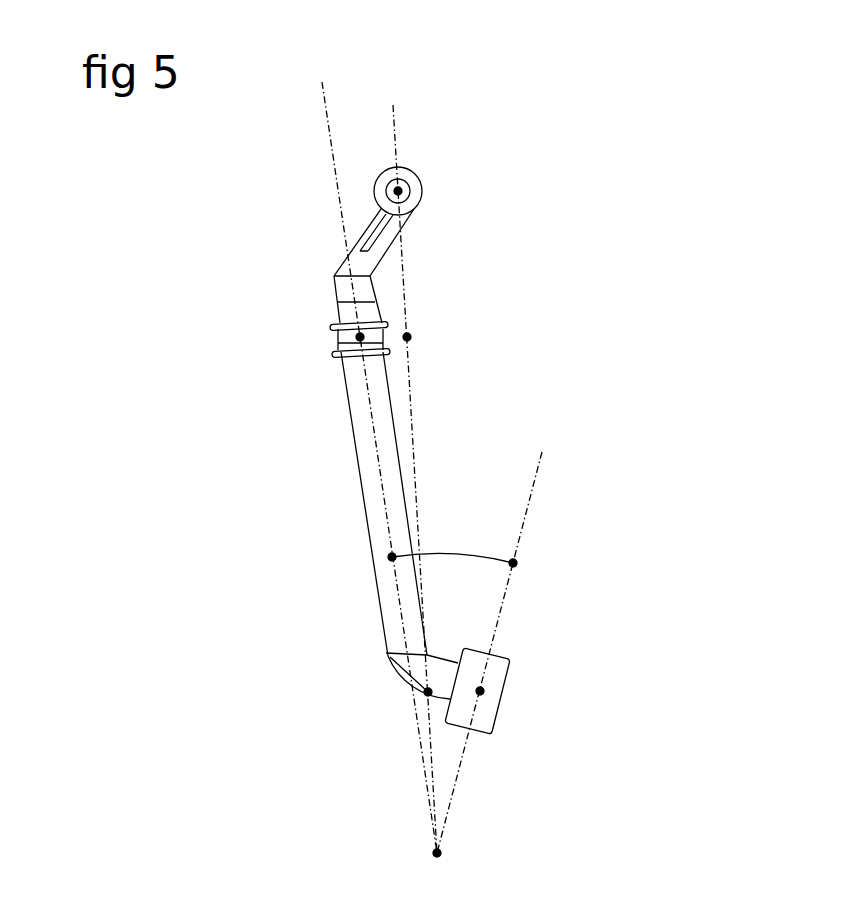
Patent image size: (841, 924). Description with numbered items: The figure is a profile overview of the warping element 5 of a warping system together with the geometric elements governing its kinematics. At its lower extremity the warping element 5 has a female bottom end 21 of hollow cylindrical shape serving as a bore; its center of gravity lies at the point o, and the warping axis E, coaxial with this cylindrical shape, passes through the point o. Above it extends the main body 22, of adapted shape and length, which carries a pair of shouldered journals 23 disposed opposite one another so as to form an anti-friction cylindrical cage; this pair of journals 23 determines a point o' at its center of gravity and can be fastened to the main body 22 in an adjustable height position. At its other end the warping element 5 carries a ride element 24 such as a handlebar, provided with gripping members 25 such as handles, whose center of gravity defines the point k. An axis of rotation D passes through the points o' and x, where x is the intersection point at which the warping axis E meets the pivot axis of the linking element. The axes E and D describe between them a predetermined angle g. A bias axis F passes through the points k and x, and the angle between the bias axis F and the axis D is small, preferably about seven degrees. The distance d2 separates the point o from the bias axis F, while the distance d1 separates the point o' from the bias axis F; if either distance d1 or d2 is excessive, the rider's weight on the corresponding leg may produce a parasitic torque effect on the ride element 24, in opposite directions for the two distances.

The warping element 5 is at (128, 668).
The female bottom end 21 is at (498, 667).
The main body 22 is at (372, 480).
The shouldered journals 23 is at (336, 343).
The ride element 24 is at (352, 250).
The gripping members 25 is at (415, 172).
The point k is at (420, 208).
The distance d1 is at (397, 330).
The distance d2 is at (390, 658).
The point o is at (572, 731).
The point o' is at (272, 383).
The angle g is at (465, 543).
The point x is at (443, 848).
The axis of rotation D is at (373, 443).
The warping axis E is at (502, 628).
The bias axis F is at (415, 455).